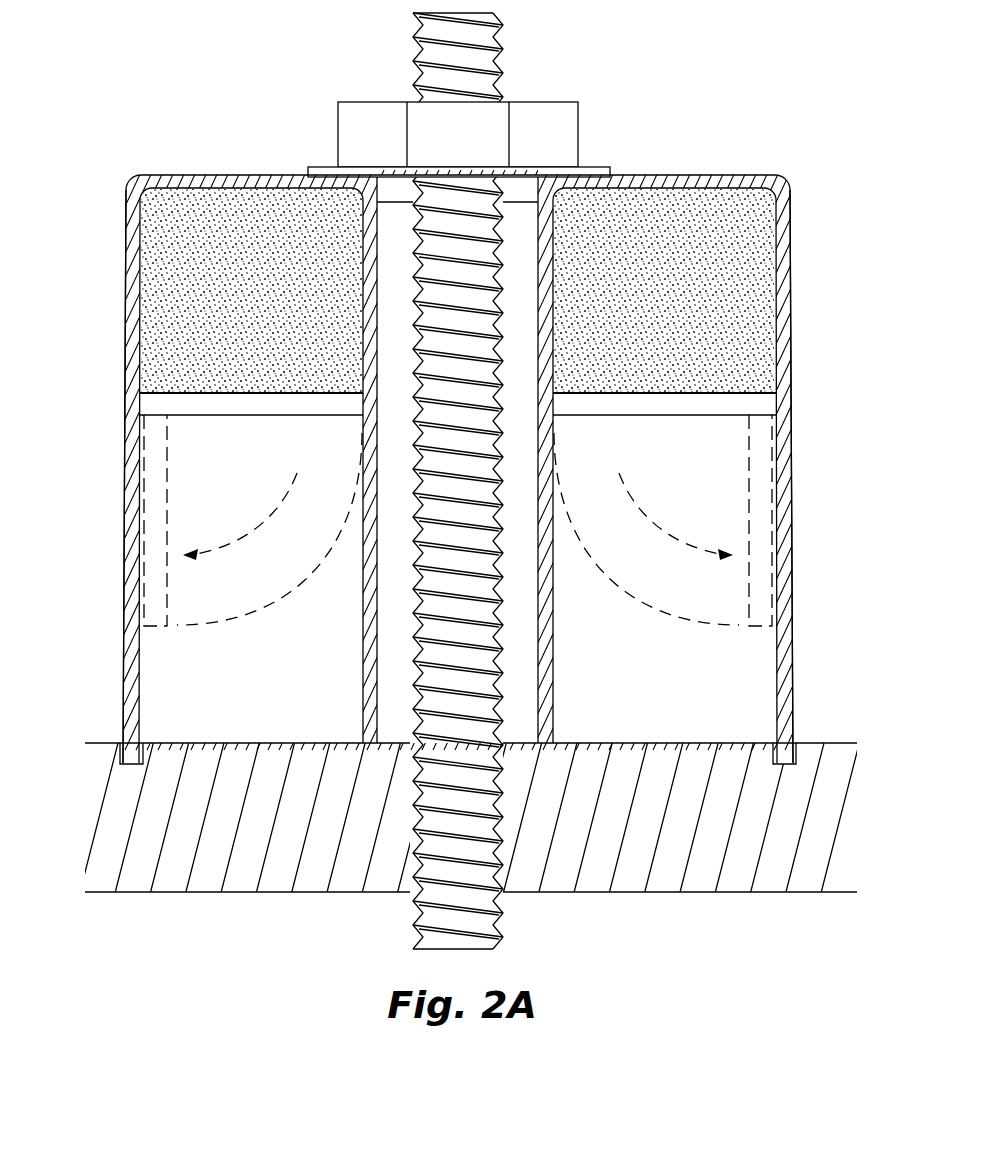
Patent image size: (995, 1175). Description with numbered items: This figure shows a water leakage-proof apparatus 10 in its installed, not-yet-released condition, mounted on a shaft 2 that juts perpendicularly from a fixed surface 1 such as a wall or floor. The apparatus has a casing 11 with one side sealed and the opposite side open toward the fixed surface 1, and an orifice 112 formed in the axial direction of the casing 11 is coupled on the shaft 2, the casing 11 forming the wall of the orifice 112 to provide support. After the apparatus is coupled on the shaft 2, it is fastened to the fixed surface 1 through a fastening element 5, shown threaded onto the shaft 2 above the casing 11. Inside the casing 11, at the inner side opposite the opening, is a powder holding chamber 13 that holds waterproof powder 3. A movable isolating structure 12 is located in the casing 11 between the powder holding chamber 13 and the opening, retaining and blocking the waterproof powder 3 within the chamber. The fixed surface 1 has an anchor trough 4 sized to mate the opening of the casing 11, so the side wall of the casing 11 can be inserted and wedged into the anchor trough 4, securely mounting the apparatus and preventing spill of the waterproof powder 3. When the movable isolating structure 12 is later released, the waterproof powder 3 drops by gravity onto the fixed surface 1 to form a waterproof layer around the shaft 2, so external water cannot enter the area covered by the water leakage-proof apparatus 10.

The fixed surface 1 is at (823, 820).
The shaft 2 is at (483, 52).
The waterproof powder 3 is at (233, 184).
The anchor trough 4 is at (121, 757).
The fastening element 5 is at (567, 127).
The water leakage-proof apparatus 10 is at (497, 411).
The casing 11 is at (785, 377).
The movable isolating structure 12 is at (163, 402).
The powder holding chamber 13 is at (188, 230).
The orifice 112 is at (398, 200).